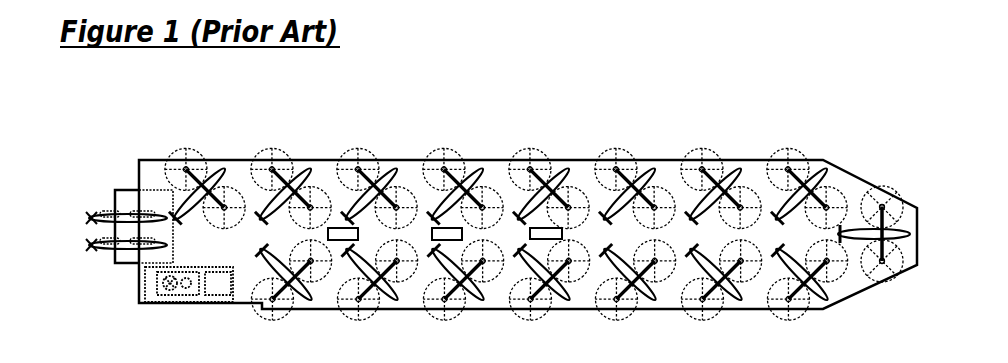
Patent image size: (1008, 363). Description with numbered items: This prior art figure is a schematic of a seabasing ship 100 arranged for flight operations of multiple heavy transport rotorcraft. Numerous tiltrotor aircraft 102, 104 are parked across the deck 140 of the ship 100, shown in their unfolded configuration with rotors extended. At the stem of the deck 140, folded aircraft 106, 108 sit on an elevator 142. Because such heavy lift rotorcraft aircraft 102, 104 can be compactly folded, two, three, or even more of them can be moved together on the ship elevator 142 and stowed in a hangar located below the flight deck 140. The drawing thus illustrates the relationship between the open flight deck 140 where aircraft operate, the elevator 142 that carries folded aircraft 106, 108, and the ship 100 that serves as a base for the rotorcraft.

The ship 100 is at (104, 137).
The tiltrotor aircraft 102 is at (300, 162).
The tiltrotor aircraft 104 is at (383, 162).
The folded aircraft 106 is at (87, 216).
The folded aircraft 108 is at (87, 250).
The deck 140 is at (492, 160).
The elevator 142 is at (126, 190).